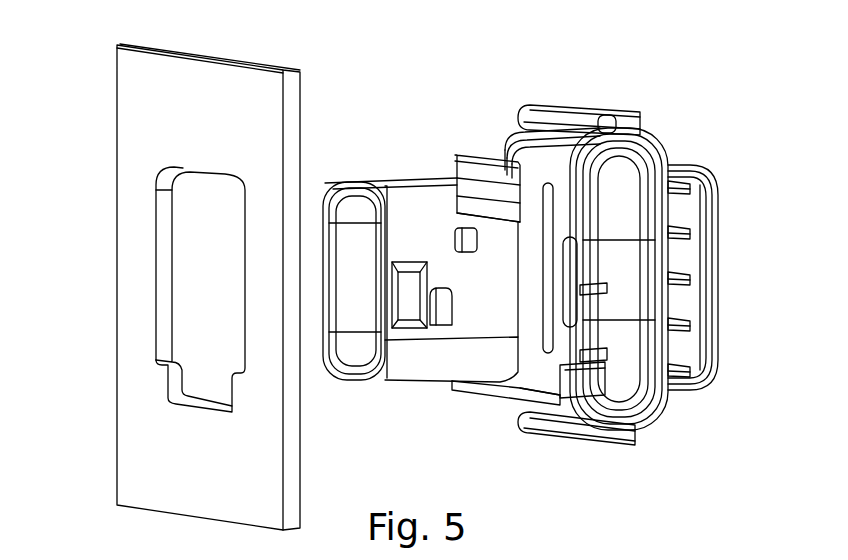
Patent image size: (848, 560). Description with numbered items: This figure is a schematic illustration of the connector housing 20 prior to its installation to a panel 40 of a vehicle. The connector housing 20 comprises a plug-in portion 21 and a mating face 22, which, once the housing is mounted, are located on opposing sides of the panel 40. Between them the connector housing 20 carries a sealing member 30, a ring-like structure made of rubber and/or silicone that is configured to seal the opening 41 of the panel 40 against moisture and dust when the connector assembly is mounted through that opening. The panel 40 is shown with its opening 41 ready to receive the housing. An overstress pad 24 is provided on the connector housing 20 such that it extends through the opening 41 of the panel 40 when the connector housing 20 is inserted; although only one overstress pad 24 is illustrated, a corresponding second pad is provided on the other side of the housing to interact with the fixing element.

The connector housing 20 is at (570, 229).
The plug-in portion 21 is at (705, 237).
The mating face 22 is at (410, 203).
The overstress pad 24 is at (605, 302).
The sealing member 30 is at (648, 162).
The panel 40 is at (140, 114).
The opening 41 is at (163, 250).